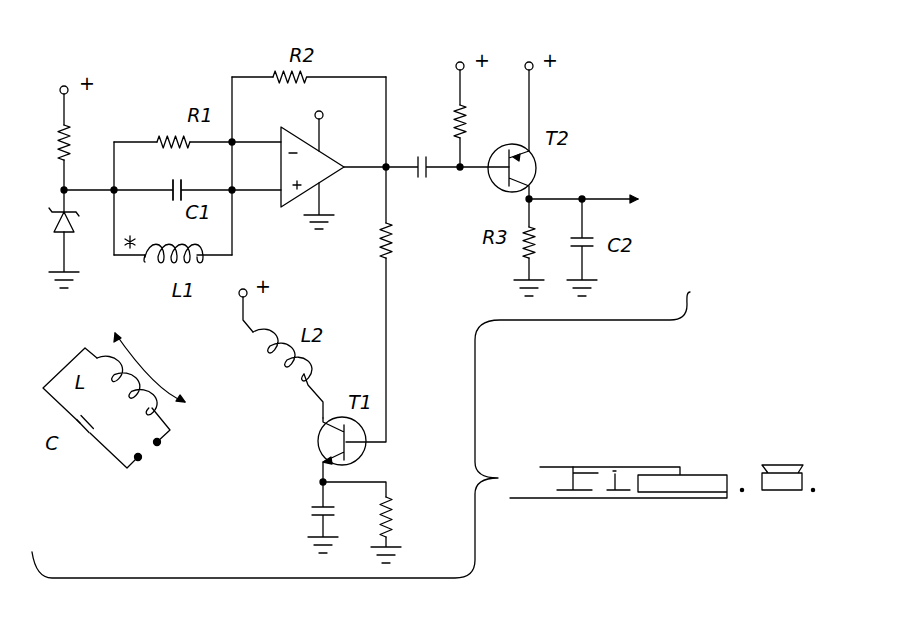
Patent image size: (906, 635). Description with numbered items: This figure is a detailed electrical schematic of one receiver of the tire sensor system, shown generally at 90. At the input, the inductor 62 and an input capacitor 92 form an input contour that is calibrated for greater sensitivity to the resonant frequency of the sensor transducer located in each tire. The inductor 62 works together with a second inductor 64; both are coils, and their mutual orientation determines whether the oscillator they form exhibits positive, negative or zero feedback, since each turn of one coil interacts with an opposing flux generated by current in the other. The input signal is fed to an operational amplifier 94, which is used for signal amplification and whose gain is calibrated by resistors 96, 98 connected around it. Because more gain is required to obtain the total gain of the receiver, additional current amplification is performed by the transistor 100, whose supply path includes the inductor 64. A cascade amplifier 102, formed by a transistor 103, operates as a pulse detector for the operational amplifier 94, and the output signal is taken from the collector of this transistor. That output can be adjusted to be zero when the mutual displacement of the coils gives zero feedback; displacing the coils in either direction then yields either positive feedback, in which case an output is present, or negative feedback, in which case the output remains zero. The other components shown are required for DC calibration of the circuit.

The inductor 62 is at (141, 266).
The inductor 64 is at (277, 362).
The electrical schematic diagram of receiver 90 is at (653, 131).
The input capacitor 92 is at (176, 200).
The operational amplifier 94 is at (283, 207).
The resistor 96 is at (172, 135).
The resistor 98 is at (284, 74).
The transistor 100 is at (316, 446).
The cascade amplifier 102 is at (494, 260).
The transistor 103 is at (536, 168).